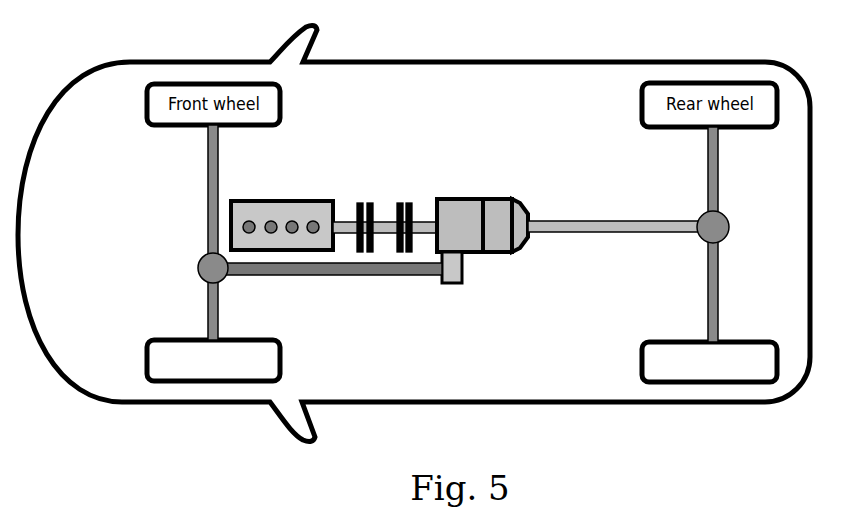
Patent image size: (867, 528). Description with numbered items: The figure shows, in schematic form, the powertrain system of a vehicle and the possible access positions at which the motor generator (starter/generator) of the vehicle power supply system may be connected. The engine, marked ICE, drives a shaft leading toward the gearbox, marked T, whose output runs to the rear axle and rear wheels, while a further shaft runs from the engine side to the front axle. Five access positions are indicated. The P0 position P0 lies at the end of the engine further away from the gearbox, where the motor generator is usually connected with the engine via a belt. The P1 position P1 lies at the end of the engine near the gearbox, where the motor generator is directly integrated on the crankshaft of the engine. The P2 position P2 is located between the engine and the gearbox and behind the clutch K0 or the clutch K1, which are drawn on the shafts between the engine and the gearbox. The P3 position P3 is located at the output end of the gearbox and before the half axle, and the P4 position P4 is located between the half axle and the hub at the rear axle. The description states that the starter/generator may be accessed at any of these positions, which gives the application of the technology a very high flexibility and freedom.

The P0 position P0 is at (234, 200).
The P1 position P1 is at (345, 224).
The P2 position P2 is at (382, 216).
The P3 position P3 is at (584, 215).
The P4 position P4 is at (726, 267).
The clutch K0 is at (369, 259).
The clutch K1 is at (409, 259).
The internal combustion engine ICE is at (282, 212).
The transmission T is at (482, 213).